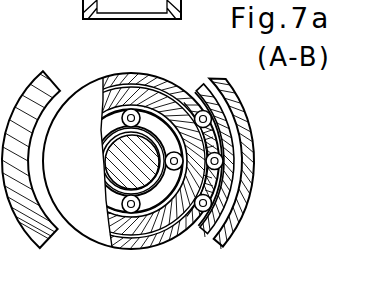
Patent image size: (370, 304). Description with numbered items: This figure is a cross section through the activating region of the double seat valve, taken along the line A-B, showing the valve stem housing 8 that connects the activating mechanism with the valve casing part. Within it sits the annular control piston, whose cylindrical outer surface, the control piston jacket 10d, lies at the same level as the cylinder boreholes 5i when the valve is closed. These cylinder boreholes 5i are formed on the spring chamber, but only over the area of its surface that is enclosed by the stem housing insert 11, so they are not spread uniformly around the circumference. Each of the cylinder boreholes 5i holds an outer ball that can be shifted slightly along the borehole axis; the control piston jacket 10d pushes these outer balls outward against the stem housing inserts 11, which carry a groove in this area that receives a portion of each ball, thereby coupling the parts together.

The control piston jacket 10d is at (207, 142).
The stem housing insert 11 is at (207, 106).
The valve stem housing 8 is at (246, 158).
The cylinder boreholes 5i is at (205, 183).